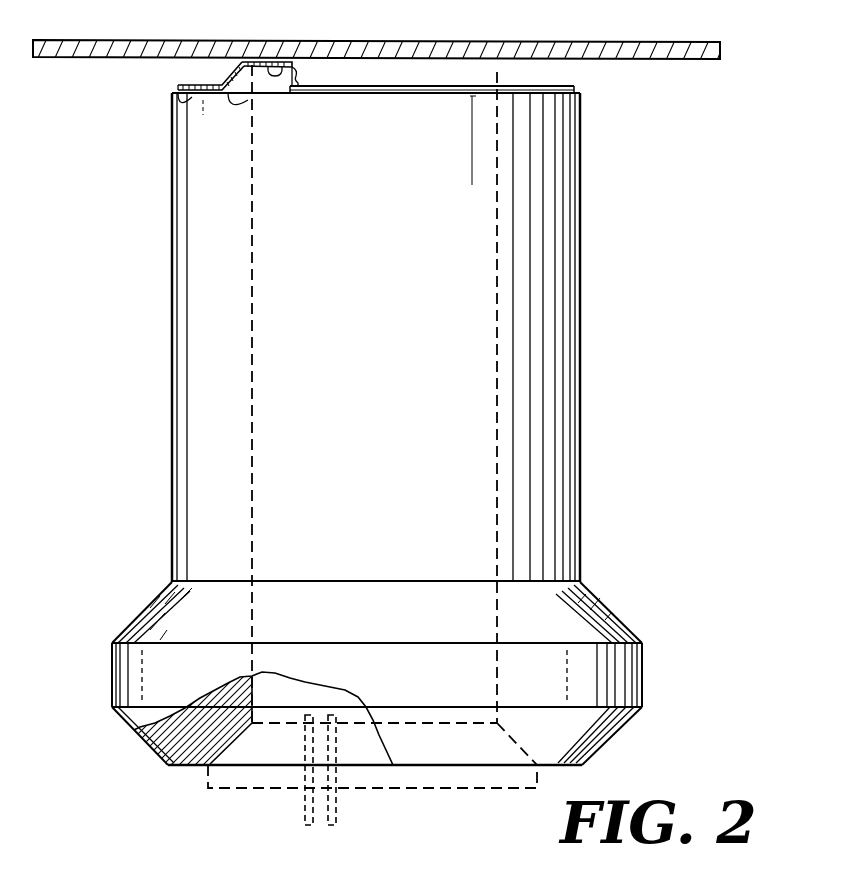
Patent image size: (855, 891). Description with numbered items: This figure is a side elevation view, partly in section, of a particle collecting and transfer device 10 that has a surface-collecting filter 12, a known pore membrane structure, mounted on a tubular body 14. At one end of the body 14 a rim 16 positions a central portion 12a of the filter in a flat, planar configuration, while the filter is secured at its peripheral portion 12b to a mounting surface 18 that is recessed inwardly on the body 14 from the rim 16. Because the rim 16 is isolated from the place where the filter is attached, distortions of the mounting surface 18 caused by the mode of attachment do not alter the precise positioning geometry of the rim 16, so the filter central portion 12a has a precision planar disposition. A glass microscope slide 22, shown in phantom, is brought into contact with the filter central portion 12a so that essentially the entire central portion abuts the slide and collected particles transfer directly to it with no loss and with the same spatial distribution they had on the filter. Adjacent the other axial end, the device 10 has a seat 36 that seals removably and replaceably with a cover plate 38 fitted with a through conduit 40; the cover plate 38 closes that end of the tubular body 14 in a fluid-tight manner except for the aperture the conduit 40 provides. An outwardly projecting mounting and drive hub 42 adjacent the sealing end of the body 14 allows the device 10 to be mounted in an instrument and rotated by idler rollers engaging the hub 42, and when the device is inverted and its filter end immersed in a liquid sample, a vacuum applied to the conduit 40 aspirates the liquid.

The particle collecting and transfer device 10 is at (160, 313).
The surface-collecting filter 12 is at (512, 78).
The central portion of the filter 12a is at (292, 62).
The peripheral portion of the filter 12b is at (200, 84).
The tubular body 14 is at (583, 329).
The rim 16 is at (240, 96).
The mounting surface 18 is at (190, 97).
The glass microscope slide 22 is at (620, 42).
The seat 36 is at (241, 730).
The cover plate 38 is at (376, 785).
The through conduit 40 is at (318, 826).
The mounting and drive hub 42 is at (616, 620).